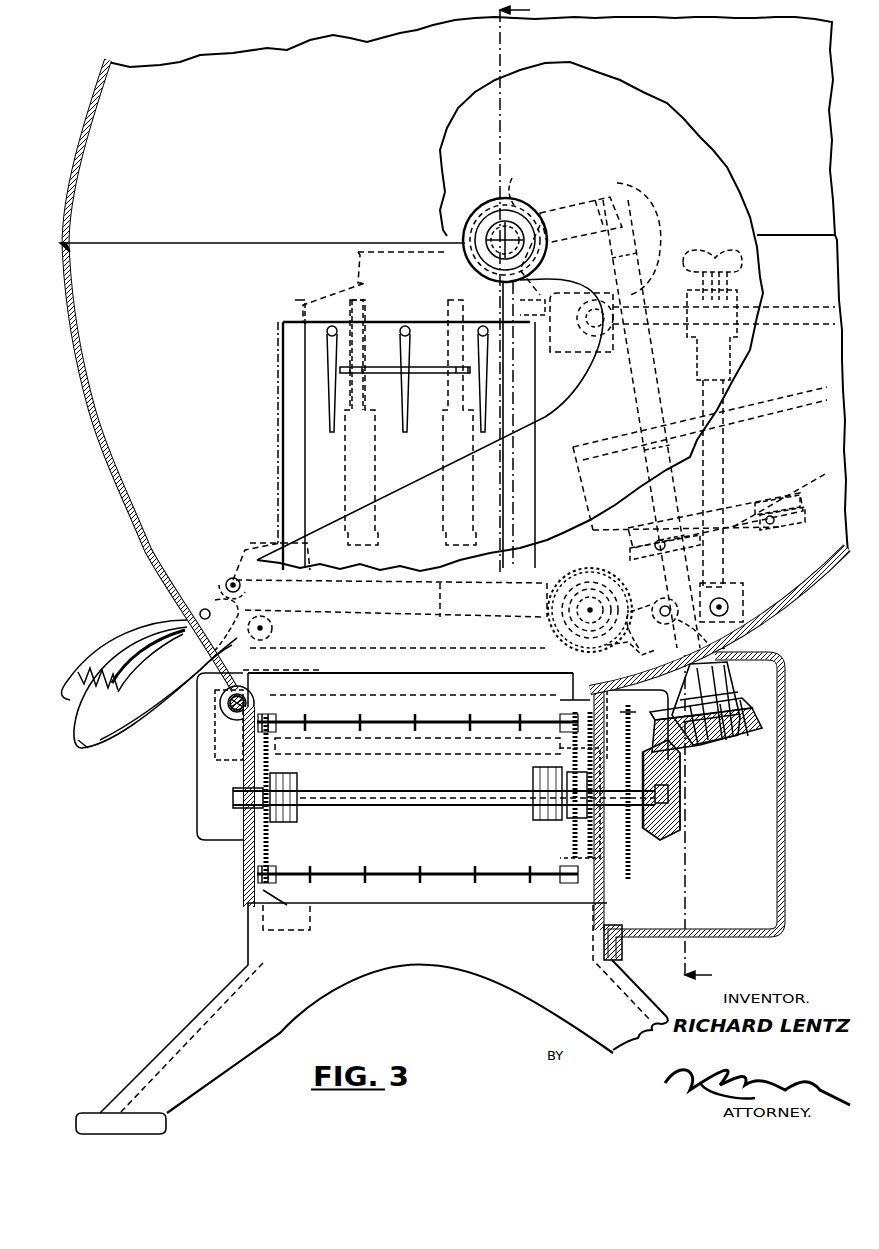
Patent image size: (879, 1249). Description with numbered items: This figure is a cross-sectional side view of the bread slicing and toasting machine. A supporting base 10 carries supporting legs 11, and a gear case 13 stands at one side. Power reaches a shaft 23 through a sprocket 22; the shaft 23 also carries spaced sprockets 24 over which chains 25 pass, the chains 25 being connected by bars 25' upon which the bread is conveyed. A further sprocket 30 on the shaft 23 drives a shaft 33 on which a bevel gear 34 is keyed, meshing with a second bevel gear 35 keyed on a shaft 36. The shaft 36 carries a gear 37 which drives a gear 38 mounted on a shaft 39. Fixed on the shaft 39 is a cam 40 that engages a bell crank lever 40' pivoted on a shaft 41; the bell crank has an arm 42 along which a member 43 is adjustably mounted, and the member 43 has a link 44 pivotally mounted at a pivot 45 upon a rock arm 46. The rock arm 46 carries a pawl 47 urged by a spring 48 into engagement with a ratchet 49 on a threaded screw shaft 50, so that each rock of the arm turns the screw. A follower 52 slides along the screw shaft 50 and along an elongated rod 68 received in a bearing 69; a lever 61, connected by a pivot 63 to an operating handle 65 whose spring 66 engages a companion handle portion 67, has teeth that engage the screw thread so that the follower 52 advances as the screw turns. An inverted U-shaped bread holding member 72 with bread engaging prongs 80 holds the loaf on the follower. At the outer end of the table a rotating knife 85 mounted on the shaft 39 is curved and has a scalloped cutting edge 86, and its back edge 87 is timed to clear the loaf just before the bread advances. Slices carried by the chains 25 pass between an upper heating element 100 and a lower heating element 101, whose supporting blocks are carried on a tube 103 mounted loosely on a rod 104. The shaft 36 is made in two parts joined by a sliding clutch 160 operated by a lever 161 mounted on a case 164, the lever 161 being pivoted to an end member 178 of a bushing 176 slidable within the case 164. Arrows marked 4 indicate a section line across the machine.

The section line 4- 4 is at (613, 494).
The supporting base 10 is at (245, 893).
The supporting legs 11 is at (190, 1085).
The gear case 13 is at (786, 898).
The sprocket 22 is at (570, 837).
The shaft 23 is at (403, 802).
The spaced sprockets 24 is at (548, 762).
The chains 25 is at (417, 785).
The bars 25' is at (417, 784).
The sprocket 30 is at (630, 874).
The shaft 33 is at (670, 794).
The bevel gear 34 is at (670, 777).
The second bevel gear 35 is at (768, 725).
The shaft 36 is at (608, 385).
The gear 37 is at (612, 190).
The gear 38 is at (512, 180).
The shaft 39 is at (500, 212).
The cam 40 is at (414, 425).
The bell crank lever 40' is at (581, 200).
The shaft 41 is at (610, 300).
The arm 42 is at (640, 332).
The member 43 is at (745, 270).
The link 44 is at (700, 392).
The pivot 45 is at (728, 600).
The rock arm 46 is at (650, 600).
The pawl 47 is at (644, 650).
The spring 48 is at (688, 634).
The ratchet 49 is at (600, 575).
The screw shaft 50 is at (580, 582).
The follower 52 is at (298, 386).
The lever 61 is at (488, 618).
The pivot 63 is at (228, 578).
The operating handle 65 is at (138, 640).
The spring 66 is at (80, 660).
The companion handle portion 67 is at (98, 745).
The elongated rod 68 is at (275, 632).
The bearing 69 is at (221, 624).
The bread holding member 72 is at (308, 355).
The bread engaging prongs 80 is at (330, 400).
The rotating knife 85 is at (688, 160).
The cutting edge 86 is at (645, 88).
The back edge 87 is at (547, 357).
The upper heating element 100 is at (378, 674).
The lower heating element 101 is at (402, 758).
The tube 103 is at (224, 708).
The rod 104 is at (232, 710).
The sliding clutch 160 is at (625, 526).
The operating lever 161 is at (733, 533).
The case 164 is at (790, 388).
The bushing 176 is at (778, 497).
The end member 178 is at (788, 525).